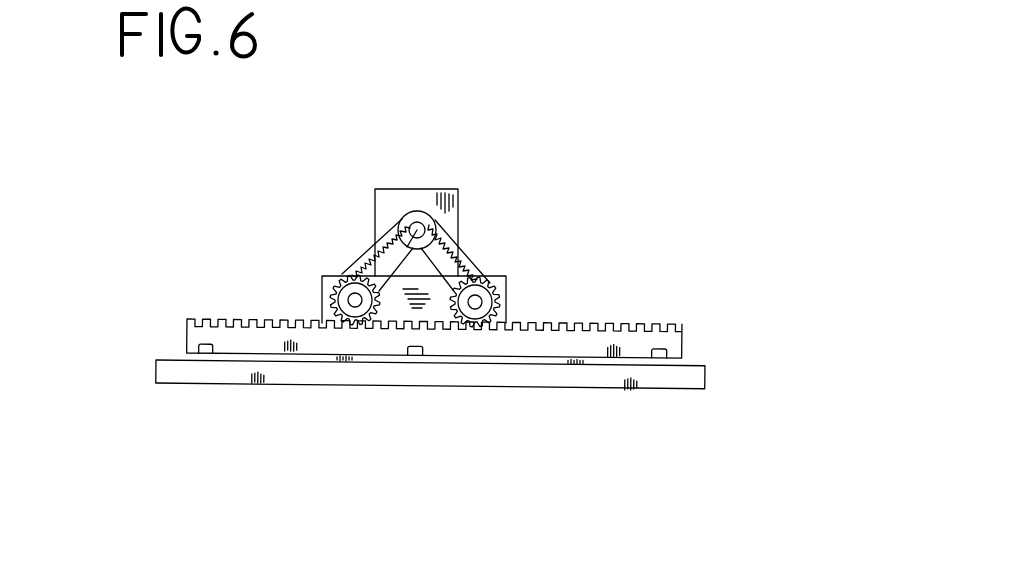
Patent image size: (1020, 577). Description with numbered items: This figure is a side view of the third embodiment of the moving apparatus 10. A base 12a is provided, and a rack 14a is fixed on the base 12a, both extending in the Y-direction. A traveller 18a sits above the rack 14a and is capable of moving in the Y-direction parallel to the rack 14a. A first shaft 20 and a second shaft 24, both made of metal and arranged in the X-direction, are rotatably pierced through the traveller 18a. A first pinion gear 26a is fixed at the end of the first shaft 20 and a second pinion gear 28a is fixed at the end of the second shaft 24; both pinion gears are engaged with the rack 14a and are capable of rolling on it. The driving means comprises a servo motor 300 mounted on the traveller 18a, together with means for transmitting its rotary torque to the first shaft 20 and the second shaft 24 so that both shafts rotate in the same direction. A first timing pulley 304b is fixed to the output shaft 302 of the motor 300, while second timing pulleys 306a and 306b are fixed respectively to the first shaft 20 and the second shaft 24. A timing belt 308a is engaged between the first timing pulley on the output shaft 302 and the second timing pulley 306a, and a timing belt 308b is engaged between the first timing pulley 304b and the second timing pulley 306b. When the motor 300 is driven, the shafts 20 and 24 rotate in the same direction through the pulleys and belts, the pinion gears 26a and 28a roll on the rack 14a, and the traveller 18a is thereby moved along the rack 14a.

The sheet feeding apparatus 10 is at (160, 188).
The base 12a is at (168, 383).
The rack 14a is at (682, 346).
The traveller 18a is at (505, 276).
The first shaft 20 is at (478, 314).
The second shaft 24 is at (355, 303).
The first pinion gear 26a is at (490, 312).
The second pinion gear 28a is at (325, 294).
The servo motor 300 is at (443, 190).
The output shaft 302 is at (410, 288).
The first timing pulley 304b is at (402, 224).
The second timing pulley 306a is at (492, 303).
The second timing pulley 306b is at (342, 313).
The timing belt 308a is at (465, 268).
The timing belt 308b is at (380, 252).